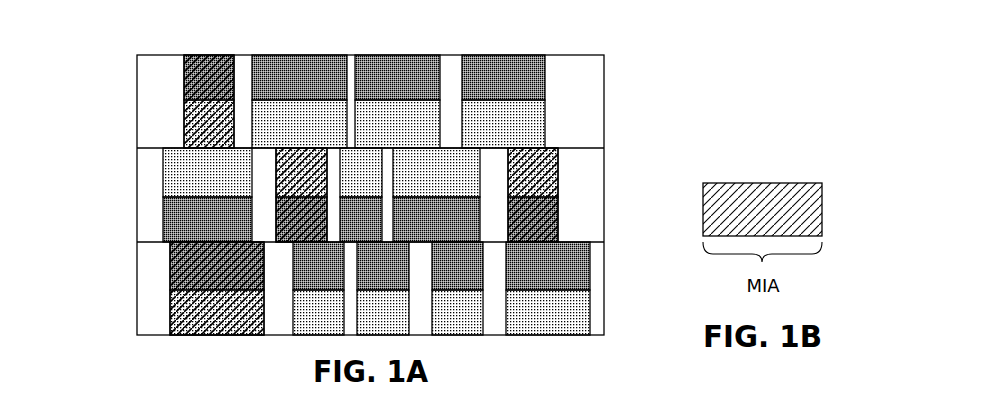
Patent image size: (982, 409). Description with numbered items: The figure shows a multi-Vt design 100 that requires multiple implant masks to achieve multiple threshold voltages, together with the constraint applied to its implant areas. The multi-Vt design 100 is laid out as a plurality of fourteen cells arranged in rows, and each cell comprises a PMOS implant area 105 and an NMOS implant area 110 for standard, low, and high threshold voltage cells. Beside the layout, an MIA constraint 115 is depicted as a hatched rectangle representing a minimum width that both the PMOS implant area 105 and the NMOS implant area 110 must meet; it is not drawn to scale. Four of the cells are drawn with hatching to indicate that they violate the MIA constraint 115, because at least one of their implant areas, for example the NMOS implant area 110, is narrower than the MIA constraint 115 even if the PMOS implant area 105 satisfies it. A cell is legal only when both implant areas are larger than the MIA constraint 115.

In FIG. 1A, the multi-Vt design 100 is at (321, 169).
In FIG. 1A, the PMOS implant area 105 is at (153, 75).
In FIG. 1A, the NMOS implant area 110 is at (182, 125).
In FIG. 1B, the MIA constraint 115 is at (761, 180).